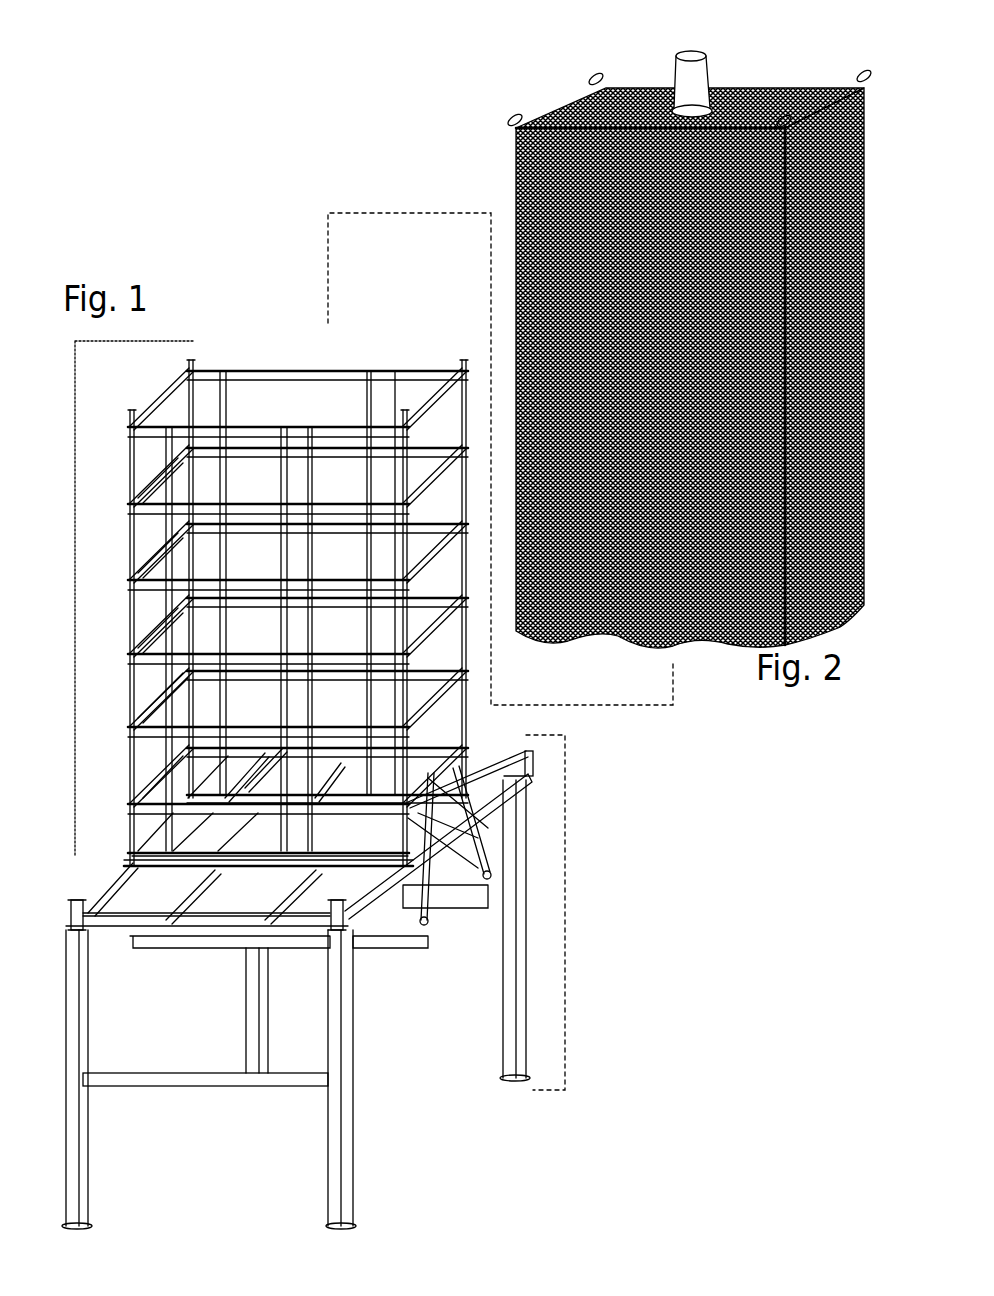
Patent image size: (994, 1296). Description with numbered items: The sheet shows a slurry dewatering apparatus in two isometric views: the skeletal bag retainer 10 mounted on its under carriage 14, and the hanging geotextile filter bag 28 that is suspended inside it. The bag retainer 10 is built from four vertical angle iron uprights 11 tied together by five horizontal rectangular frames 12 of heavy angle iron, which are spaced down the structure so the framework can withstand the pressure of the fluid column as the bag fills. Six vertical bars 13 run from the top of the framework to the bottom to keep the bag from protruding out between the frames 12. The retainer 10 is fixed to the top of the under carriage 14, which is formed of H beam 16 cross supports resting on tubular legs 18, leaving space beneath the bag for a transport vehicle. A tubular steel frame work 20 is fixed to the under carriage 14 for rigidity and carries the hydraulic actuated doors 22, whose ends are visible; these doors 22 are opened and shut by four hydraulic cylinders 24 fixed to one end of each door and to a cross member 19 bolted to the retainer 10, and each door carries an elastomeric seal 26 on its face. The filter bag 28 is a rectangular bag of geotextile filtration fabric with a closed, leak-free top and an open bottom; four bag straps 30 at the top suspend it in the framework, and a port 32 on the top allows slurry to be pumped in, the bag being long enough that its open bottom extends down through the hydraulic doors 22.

In FIG. 1, the bag retainer 10 is at (67, 590).
In FIG. 1, the vertical angle iron uprights 11 is at (130, 478).
In FIG. 1, the rectangular frames 12 is at (302, 420).
In FIG. 1, the vertical bars 13 is at (412, 402).
In FIG. 1, the undercarriage 14 is at (557, 905).
In FIG. 1, the H beam cross supports 16 is at (68, 890).
In FIG. 1, the tubular legs 18 is at (238, 992).
In FIG. 1, the cross member 19 is at (513, 770).
In FIG. 1, the tubular steel frame work 20 is at (262, 913).
In FIG. 1, the hydraulic actuated doors 22 is at (443, 857).
In FIG. 1, the hydraulic cylinders 24 is at (490, 838).
In FIG. 1, the elastomeric seal 26 is at (362, 936).
In FIG. 2, the geotextile filter bag 28 is at (697, 570).
In FIG. 2, the bag straps 30 is at (509, 110).
In FIG. 2, the port 32 is at (690, 85).